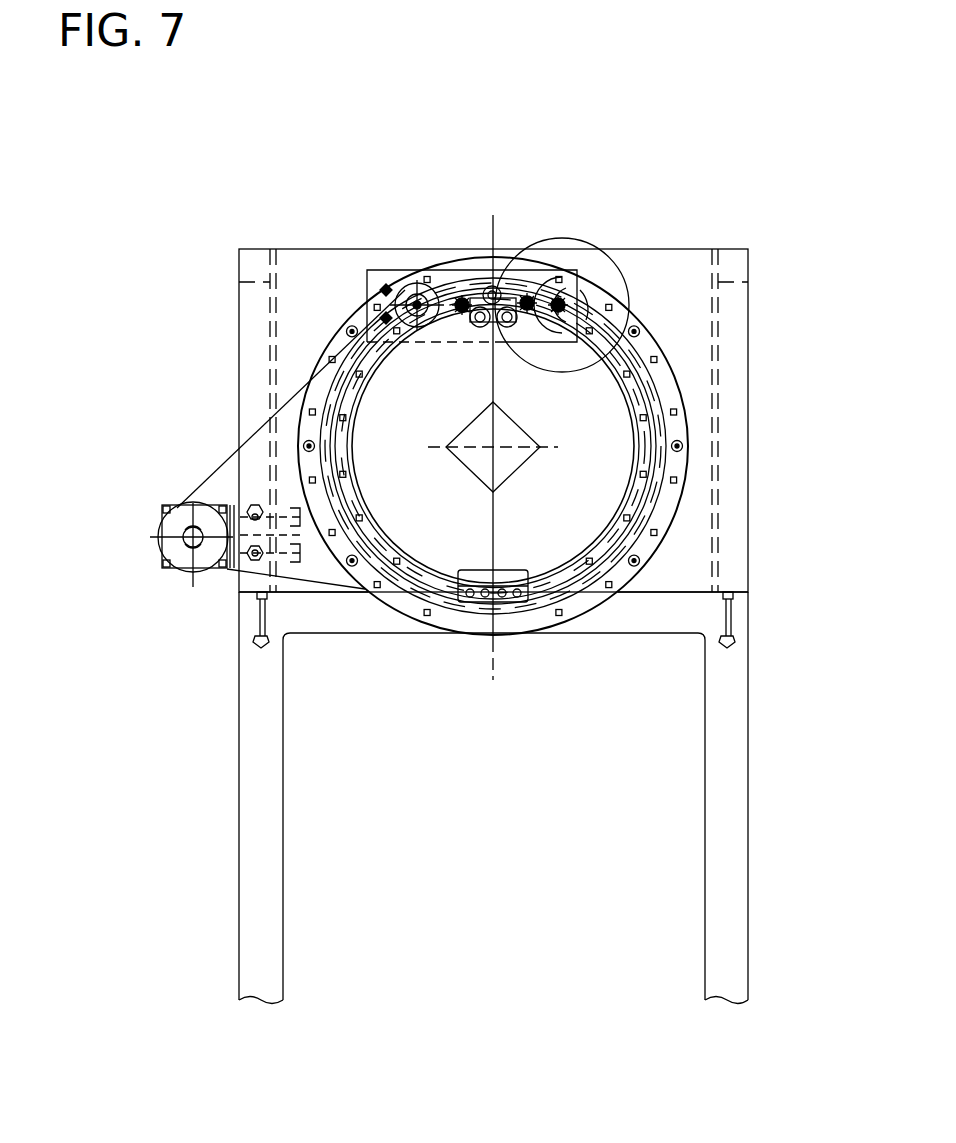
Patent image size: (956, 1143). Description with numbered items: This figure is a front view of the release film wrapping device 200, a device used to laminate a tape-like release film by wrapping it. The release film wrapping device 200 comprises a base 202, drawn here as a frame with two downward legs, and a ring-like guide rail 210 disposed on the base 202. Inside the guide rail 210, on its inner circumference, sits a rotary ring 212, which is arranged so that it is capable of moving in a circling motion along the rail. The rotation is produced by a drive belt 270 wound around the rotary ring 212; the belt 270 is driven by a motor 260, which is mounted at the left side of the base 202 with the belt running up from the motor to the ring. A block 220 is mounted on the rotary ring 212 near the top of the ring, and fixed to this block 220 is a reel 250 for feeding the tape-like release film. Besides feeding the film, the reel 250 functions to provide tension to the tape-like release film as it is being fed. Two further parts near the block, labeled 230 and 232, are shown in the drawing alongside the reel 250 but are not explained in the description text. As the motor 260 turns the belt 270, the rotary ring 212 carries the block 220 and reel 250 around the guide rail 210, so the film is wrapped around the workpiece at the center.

The release film wrapping device 200 is at (604, 148).
The base 202 is at (740, 755).
The ring-like guide rail 210 is at (683, 446).
The rotary ring 212 is at (632, 500).
The block 220 is at (492, 288).
The drive pulley 230 is at (412, 297).
The tension roller 232 is at (575, 292).
The reel 250 is at (572, 242).
The motor 260 is at (168, 540).
The drive belt 270 is at (233, 461).